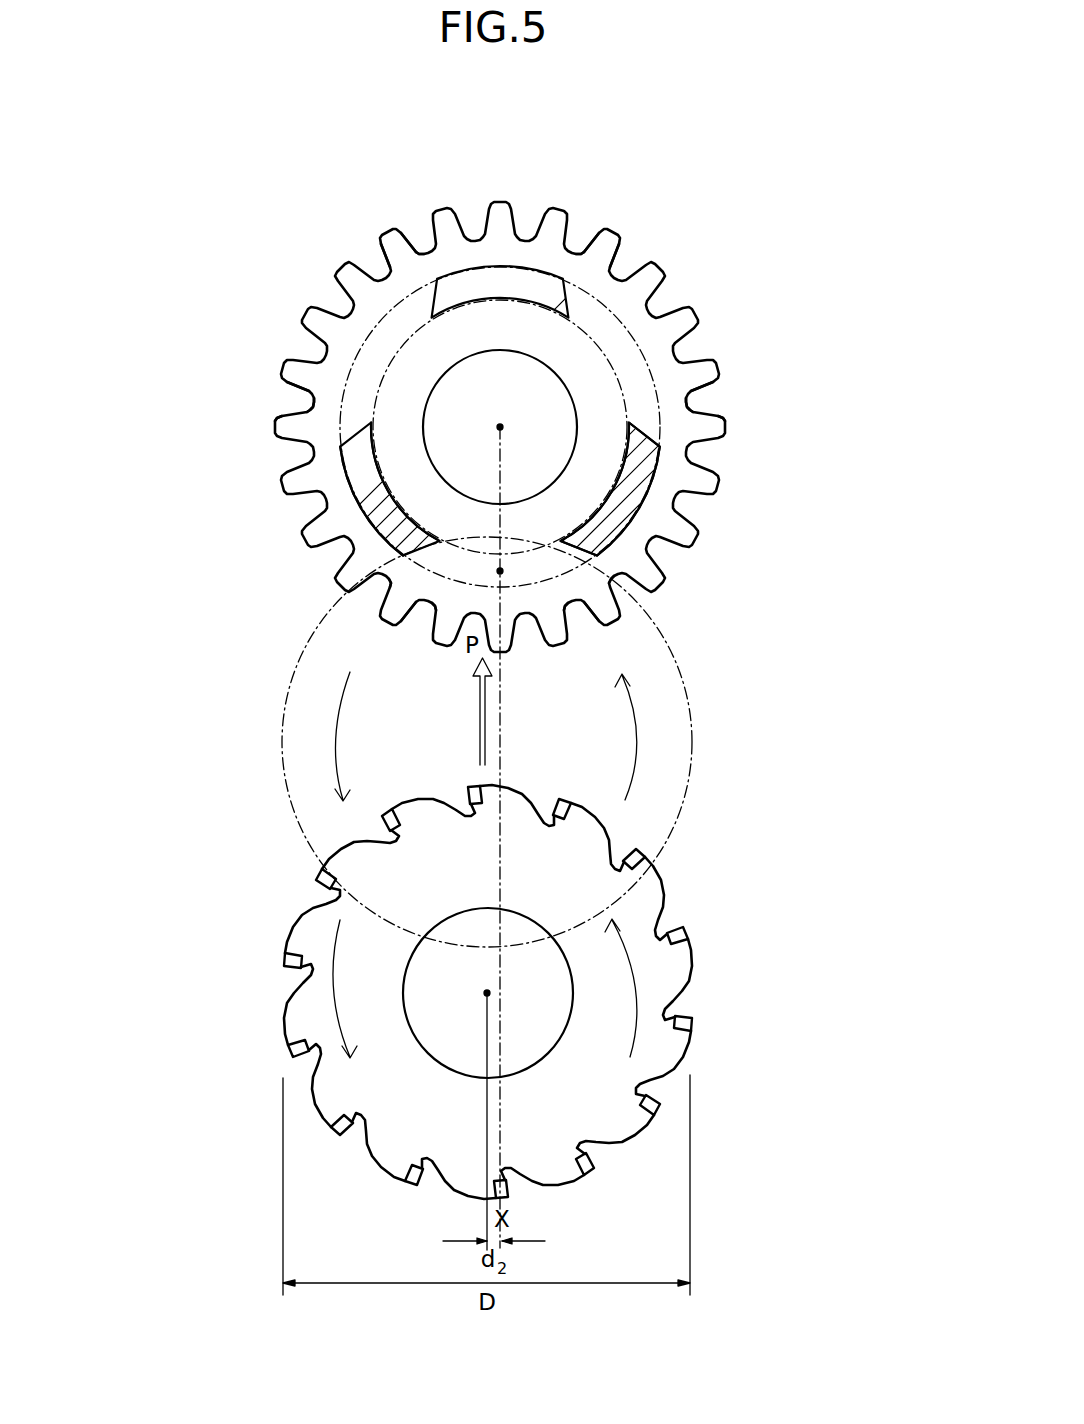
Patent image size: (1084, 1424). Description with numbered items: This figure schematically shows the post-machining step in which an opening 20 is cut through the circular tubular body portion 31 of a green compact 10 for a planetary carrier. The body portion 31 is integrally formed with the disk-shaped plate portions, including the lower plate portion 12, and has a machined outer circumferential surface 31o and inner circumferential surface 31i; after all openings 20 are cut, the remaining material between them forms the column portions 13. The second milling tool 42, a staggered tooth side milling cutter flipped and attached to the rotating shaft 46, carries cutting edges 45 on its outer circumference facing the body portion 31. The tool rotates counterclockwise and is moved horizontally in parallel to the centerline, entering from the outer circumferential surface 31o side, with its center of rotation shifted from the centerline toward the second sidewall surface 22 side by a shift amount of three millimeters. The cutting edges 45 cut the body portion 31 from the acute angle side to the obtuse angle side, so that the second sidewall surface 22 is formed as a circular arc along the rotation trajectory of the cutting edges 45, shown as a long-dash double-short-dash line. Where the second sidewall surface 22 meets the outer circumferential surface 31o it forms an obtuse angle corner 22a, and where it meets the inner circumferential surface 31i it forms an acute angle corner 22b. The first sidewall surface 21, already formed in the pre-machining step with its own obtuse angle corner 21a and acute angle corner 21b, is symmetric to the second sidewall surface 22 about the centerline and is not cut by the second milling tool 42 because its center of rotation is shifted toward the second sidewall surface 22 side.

The green compact 10 is at (457, 197).
The plate portion 12 is at (648, 522).
The column portion 13 is at (524, 295).
The opening 20 is at (386, 360).
The first sidewall surface 21 is at (335, 425).
The obtuse angle corner 21a is at (345, 428).
The acute angle corner 21b is at (331, 388).
The second sidewall surface 22 is at (395, 282).
The obtuse angle corner 22a is at (418, 262).
The acute angle corner 22b is at (398, 300).
The body portion 31 is at (668, 493).
The outer circumferential surface 31o is at (353, 490).
The inner circumferential surface 31i is at (386, 512).
The second milling tool 42 is at (687, 797).
The cutting edges 45 is at (689, 1022).
The rotating shaft 46 is at (546, 1056).